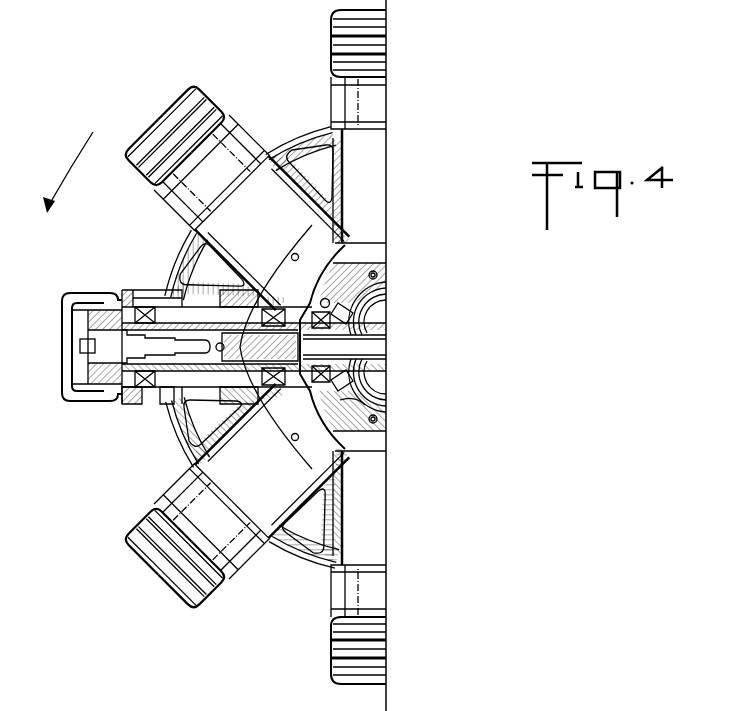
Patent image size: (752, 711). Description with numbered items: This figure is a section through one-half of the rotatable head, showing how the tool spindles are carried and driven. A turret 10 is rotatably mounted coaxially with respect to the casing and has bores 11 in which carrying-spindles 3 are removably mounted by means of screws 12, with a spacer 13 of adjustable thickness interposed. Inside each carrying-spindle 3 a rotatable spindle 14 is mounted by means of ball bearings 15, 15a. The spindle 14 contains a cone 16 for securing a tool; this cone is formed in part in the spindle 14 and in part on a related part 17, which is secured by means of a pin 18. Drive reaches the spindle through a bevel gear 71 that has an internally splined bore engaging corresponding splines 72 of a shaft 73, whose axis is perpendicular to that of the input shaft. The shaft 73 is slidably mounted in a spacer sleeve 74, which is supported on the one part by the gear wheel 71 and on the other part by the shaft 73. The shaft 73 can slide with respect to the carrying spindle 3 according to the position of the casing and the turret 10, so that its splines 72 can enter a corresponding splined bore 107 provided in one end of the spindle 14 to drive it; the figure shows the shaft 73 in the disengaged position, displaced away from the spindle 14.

The carrying-spindle 3 is at (386, 112).
The turret 10 is at (276, 532).
The bore 11 is at (202, 292).
The screw 12 is at (136, 293).
The spacer 13 is at (162, 410).
The spindle 14 is at (106, 386).
The ball bearing 15 is at (138, 404).
The ball bearing 15a is at (271, 388).
The cone 16 is at (102, 356).
The related part 17 is at (243, 342).
The pin 18 is at (221, 342).
The bevel gear 71 is at (370, 317).
The splines 72 is at (350, 403).
The shaft 73 is at (380, 347).
The spacer sleeve 74 is at (362, 374).
The splined bore 107 is at (170, 404).